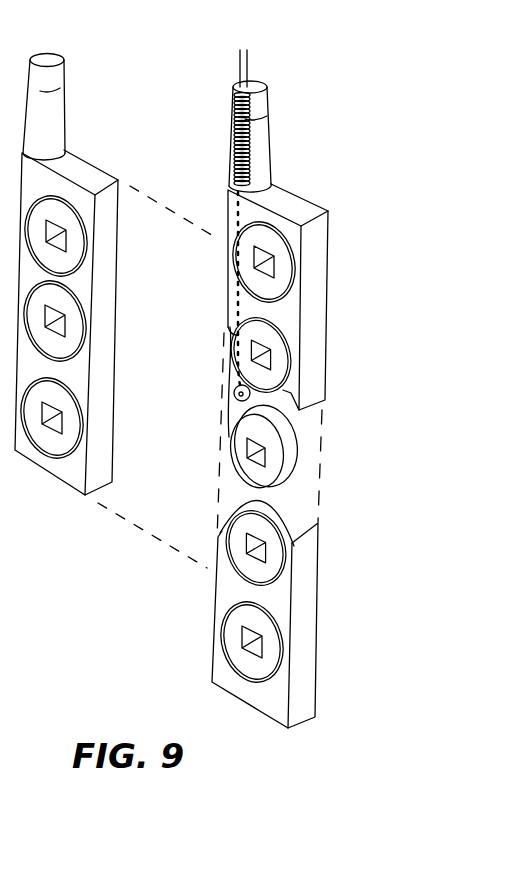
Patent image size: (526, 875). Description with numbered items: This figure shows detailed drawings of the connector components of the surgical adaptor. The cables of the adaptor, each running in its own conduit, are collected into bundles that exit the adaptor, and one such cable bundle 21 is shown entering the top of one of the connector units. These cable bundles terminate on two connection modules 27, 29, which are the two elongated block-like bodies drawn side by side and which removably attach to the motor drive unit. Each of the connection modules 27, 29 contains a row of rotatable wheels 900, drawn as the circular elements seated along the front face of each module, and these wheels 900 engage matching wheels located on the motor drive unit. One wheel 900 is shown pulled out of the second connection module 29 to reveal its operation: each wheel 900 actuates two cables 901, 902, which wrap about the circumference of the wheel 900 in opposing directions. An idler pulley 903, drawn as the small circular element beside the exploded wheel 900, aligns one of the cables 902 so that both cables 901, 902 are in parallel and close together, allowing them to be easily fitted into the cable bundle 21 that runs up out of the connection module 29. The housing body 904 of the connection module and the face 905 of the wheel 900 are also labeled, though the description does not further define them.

The connection module 27 is at (80, 275).
The connection module 29 is at (264, 389).
The cable bundle 21 is at (262, 103).
The housing block body 904 is at (308, 313).
The rotatable wheel 900 is at (275, 448).
The cable 901 is at (228, 421).
The cable 902 is at (235, 440).
The idler pulley 903 is at (234, 393).
The disk face 905 is at (250, 464).